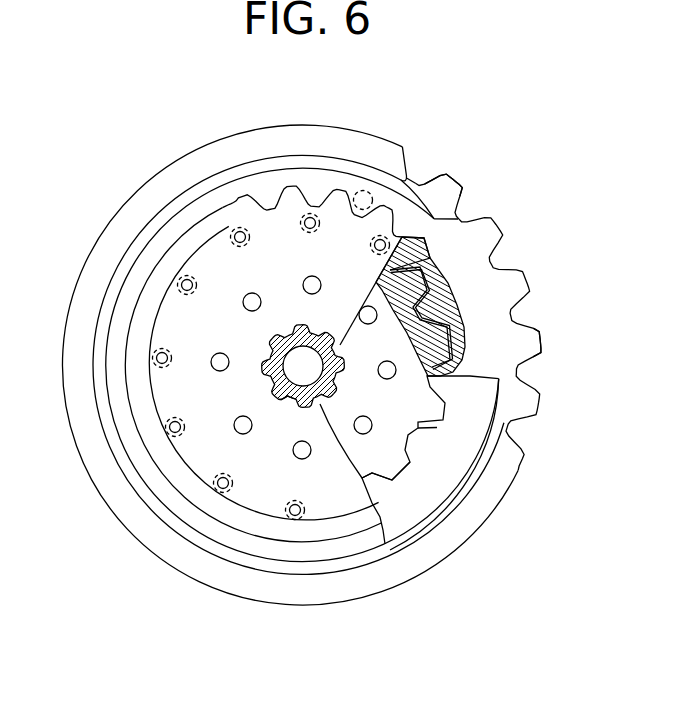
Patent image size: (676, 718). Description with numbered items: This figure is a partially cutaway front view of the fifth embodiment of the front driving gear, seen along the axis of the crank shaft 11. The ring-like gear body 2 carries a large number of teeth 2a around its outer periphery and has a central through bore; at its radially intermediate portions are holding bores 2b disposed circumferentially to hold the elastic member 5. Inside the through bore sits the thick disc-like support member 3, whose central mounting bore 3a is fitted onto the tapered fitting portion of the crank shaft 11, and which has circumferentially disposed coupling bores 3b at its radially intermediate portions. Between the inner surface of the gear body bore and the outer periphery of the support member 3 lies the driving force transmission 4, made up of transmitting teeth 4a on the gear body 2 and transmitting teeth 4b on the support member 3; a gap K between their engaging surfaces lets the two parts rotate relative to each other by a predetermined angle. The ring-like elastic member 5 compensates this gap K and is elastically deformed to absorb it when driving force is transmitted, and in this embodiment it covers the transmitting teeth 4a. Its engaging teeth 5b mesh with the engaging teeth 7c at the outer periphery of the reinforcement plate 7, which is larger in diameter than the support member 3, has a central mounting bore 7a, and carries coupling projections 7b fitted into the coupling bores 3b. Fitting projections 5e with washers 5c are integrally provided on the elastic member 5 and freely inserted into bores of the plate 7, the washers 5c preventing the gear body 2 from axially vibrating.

The gear body 2 is at (519, 322).
The teeth 2a is at (543, 344).
The holding bores 2b is at (367, 192).
The support member 3 is at (408, 435).
The mounting bore 3a is at (343, 370).
The coupling bores 3b is at (392, 480).
The driving force transmission 4 is at (475, 281).
The transmitting teeth 4a is at (452, 302).
The transmitting teeth 4b is at (433, 267).
The elastic member 5 is at (407, 182).
The engaging teeth 5b is at (313, 200).
The washers 5c is at (232, 228).
The fitting projections 5e is at (240, 228).
The reinforcement plate 7 is at (285, 208).
The mounting bore 7a is at (290, 402).
The coupling projections 7b is at (302, 459).
The engaging teeth 7c is at (343, 190).
The crank shaft 11 is at (264, 384).
The gap K is at (425, 268).